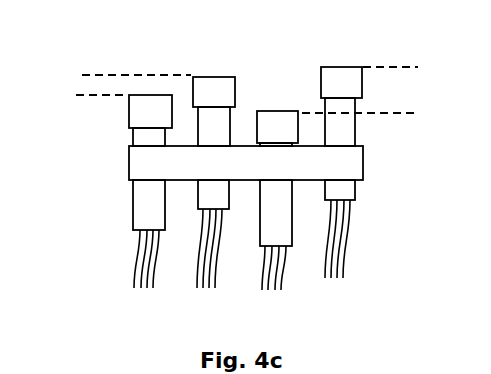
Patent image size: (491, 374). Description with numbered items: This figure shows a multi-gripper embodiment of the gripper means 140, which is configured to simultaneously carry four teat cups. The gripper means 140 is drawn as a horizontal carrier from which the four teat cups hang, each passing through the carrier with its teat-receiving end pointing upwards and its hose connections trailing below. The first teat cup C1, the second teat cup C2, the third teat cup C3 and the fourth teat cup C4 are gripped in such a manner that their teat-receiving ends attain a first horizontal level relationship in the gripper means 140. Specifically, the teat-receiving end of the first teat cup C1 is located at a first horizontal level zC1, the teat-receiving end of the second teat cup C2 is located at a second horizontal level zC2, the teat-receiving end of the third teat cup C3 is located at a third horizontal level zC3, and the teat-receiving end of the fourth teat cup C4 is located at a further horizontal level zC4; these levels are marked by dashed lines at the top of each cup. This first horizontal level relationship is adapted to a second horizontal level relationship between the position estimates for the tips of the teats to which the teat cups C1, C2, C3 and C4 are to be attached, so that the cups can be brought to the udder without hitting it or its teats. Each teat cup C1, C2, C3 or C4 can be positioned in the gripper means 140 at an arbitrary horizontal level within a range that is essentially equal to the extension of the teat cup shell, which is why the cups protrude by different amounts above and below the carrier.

The gripper means 140 is at (190, 175).
The first teat cup C1 is at (133, 136).
The second teat cup C2 is at (267, 154).
The third teat cup C3 is at (292, 232).
The fourth teat cup C4 is at (357, 135).
The first horizontal level zC1 is at (85, 97).
The second horizontal level zC2 is at (116, 74).
The third horizontal level zC3 is at (380, 114).
The horizontal level of the fourth teat cup zC4 is at (410, 70).